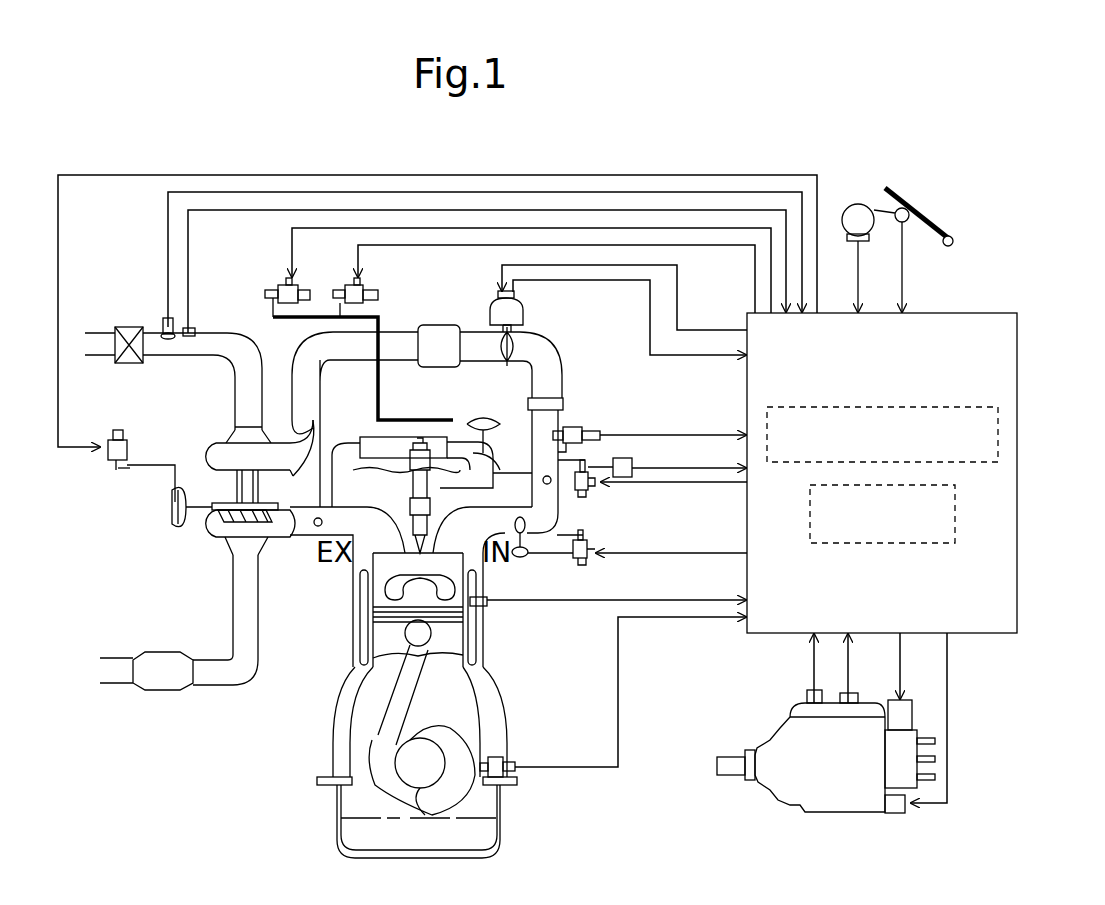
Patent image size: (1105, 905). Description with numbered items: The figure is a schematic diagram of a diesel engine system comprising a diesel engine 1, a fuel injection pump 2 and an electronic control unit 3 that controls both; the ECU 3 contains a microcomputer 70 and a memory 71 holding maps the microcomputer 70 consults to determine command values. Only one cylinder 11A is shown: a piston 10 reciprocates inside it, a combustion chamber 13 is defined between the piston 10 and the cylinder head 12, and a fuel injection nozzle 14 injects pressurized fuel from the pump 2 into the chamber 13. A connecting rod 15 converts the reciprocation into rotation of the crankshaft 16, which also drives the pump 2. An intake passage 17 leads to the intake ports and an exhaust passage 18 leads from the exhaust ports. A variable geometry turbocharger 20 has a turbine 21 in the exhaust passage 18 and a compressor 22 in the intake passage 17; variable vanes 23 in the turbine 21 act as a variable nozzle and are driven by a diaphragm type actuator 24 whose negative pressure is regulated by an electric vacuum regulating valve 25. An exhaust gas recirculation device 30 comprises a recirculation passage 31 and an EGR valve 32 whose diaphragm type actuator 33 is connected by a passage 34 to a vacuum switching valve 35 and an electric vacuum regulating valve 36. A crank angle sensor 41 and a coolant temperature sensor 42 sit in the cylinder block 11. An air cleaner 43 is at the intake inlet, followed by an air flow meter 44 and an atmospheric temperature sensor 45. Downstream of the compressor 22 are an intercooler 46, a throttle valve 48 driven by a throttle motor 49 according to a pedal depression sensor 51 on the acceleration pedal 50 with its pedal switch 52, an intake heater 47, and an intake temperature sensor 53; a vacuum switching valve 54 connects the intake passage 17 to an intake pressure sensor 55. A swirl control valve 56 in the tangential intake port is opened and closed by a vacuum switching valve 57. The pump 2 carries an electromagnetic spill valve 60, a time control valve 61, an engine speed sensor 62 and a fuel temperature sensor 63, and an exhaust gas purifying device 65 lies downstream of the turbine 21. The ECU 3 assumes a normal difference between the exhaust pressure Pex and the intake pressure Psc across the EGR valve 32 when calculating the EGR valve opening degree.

The diesel engine 1 is at (312, 742).
The fuel injection pump 2 is at (778, 728).
The electronic control unit 3 is at (744, 400).
The piston 10 is at (360, 655).
The cylinder block 11 is at (495, 700).
The cylinder 11A is at (360, 625).
The cylinder head 12 is at (352, 447).
The combustion chamber 13 is at (420, 580).
The fuel injection nozzle 14 is at (427, 480).
The connecting rod 15 is at (412, 688).
The crankshaft 16 is at (410, 790).
The intake passage 17 is at (562, 345).
The exhaust passage 18 is at (233, 624).
The variable geometry turbocharger 20 is at (232, 481).
The turbine 21 is at (206, 535).
The compressor 22 is at (205, 440).
The variable vanes 23 is at (236, 552).
The diaphragm type actuator 24 is at (172, 506).
The electric vacuum regulating valve 25 is at (108, 455).
The exhaust gas recirculation device 30 is at (367, 428).
The recirculation passage 31 is at (500, 466).
The EGR valve 32 is at (510, 362).
The diaphragm type actuator 33 is at (478, 414).
The passage 34 is at (400, 382).
The vacuum switching valve 35 is at (378, 295).
The electric vacuum regulating valve 36 is at (276, 287).
The crank angle sensor 41 is at (520, 750).
The coolant temperature sensor 42 is at (487, 606).
The air cleaner 43 is at (128, 327).
The air flow meter 44 is at (160, 318).
The atmospheric temperature sensor 45 is at (196, 328).
The intercooler 46 is at (438, 325).
The intake heater 47 is at (563, 403).
The throttle valve 48 is at (523, 310).
The throttle motor 49 is at (492, 303).
The acceleration pedal 50 is at (925, 222).
The pedal depression sensor 51 is at (858, 204).
The pedal switch 52 is at (909, 222).
The intake temperature sensor 53 is at (580, 426).
The vacuum switching valve 54 is at (600, 490).
The intake pressure sensor 55 is at (628, 458).
The swirl control valve 56 is at (523, 558).
The vacuum switching valve 57 is at (587, 562).
The electromagnetic spill valve 60 is at (912, 700).
The time control valve 61 is at (895, 813).
The engine speed sensor 62 is at (850, 693).
The fuel temperature sensor 63 is at (807, 695).
The exhaust gas purifying device 65 is at (168, 690).
The microcomputer 70 is at (998, 437).
The memory 71 is at (955, 518).
The exhaust pressure Pex is at (314, 528).
The intake pressure Psc is at (552, 485).